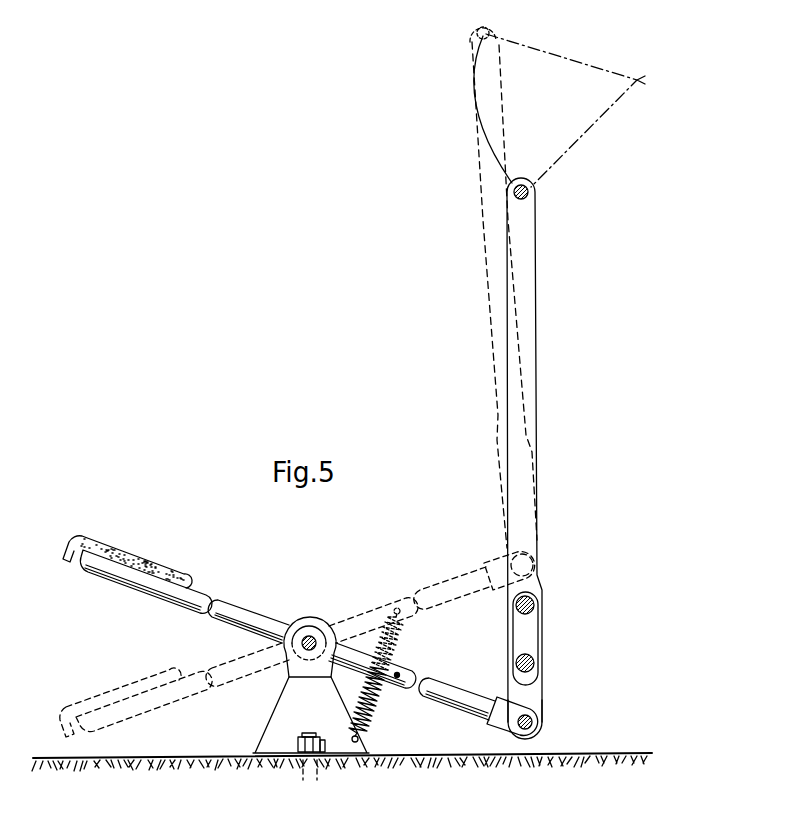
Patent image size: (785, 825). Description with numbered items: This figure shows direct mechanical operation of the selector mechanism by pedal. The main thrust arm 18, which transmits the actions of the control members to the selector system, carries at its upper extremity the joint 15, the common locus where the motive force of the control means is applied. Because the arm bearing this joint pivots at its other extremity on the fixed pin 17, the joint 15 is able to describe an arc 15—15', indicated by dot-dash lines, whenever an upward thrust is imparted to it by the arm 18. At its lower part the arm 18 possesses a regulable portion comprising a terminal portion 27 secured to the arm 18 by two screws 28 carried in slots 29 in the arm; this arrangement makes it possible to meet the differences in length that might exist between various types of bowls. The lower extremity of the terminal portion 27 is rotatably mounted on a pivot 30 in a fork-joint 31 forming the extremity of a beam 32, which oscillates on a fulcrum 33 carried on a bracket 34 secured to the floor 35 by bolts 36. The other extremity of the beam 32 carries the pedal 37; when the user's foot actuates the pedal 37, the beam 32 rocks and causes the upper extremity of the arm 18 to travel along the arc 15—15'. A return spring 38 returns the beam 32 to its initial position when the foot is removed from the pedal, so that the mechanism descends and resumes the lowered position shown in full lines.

The upper end of the arc described by the joint 15' is at (481, 285).
The joint 15 is at (543, 186).
The fixed pin 17 is at (639, 79).
The main thrust arm 18 is at (531, 333).
The terminal portion 27 is at (544, 689).
The screws 28 is at (533, 658).
The slots 29 is at (542, 618).
The pivot pin 30 is at (543, 716).
The fork-joint 31 is at (504, 730).
The beam 32 is at (444, 677).
The fulcrum 33 is at (314, 638).
The bracket 34 is at (282, 696).
The floor 35 is at (401, 760).
The bolts 36 is at (300, 738).
The pedal 37 is at (115, 547).
The return spring 38 is at (381, 707).